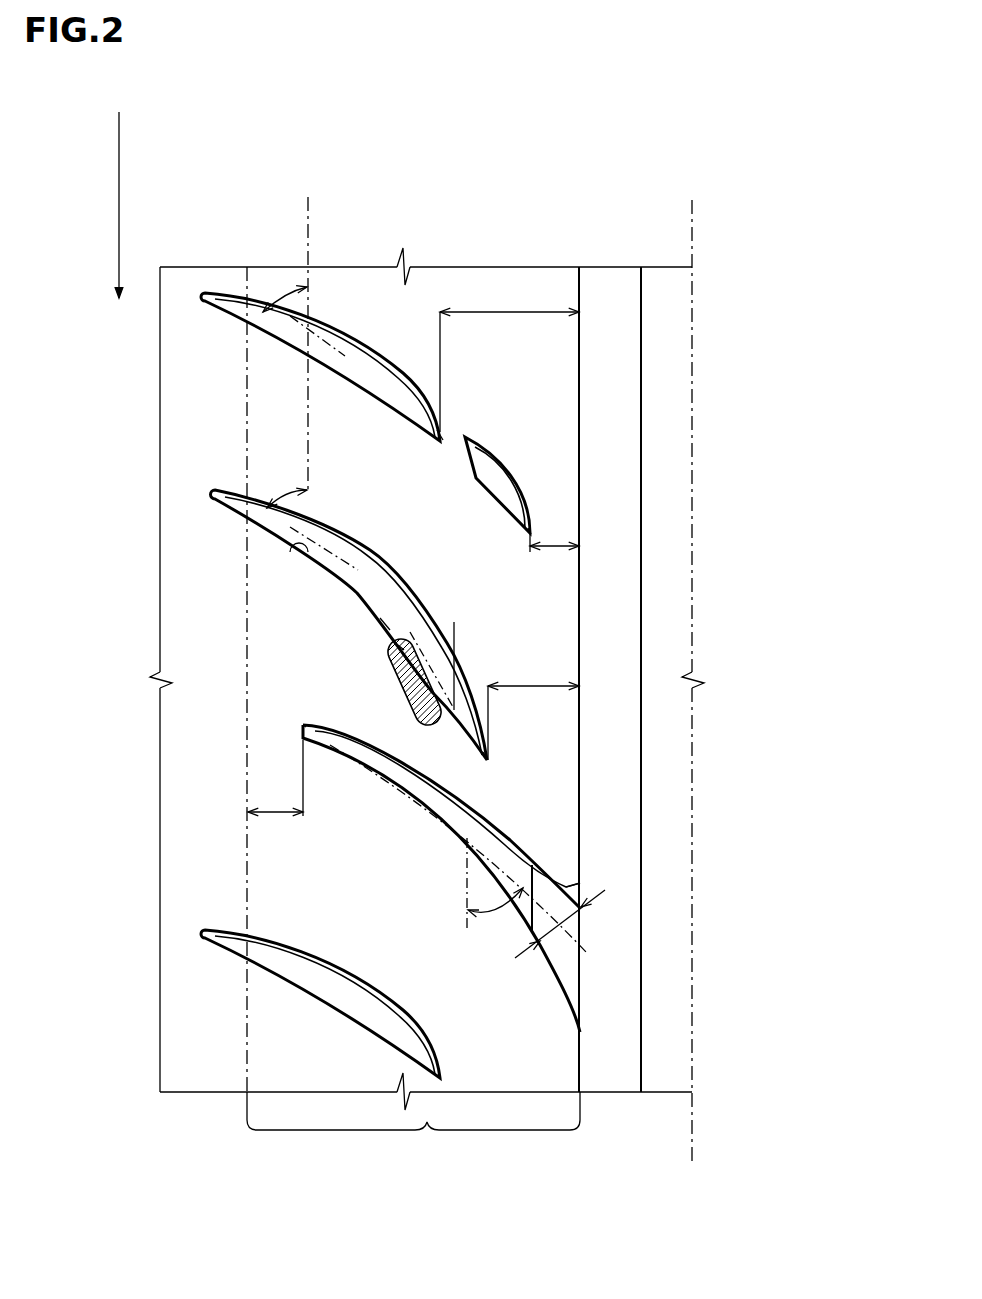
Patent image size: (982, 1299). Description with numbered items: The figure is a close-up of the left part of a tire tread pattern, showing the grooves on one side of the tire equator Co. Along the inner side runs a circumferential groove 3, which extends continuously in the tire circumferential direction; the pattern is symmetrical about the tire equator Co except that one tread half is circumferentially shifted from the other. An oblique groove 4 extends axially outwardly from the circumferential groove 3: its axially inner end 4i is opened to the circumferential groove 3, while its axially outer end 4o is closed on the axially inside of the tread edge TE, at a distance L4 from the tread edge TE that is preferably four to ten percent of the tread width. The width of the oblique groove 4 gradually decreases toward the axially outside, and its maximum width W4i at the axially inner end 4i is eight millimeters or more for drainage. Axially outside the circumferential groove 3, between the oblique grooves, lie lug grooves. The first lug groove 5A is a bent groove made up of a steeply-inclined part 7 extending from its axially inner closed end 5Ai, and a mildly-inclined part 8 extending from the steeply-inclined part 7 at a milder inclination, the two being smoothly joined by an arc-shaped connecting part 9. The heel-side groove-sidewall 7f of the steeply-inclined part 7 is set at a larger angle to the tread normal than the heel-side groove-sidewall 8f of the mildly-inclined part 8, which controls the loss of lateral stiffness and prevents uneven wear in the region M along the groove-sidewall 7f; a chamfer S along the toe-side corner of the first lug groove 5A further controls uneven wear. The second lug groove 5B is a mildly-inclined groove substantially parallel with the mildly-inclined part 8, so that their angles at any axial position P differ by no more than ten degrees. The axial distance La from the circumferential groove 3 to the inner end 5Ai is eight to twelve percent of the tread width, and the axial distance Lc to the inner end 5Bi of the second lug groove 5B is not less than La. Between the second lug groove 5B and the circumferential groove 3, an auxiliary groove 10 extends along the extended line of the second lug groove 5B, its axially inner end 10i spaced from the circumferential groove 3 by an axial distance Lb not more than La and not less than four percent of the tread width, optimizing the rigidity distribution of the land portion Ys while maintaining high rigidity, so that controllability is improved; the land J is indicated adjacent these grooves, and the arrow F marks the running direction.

The circumferential groove 3 is at (615, 285).
The first lug groove 5A is at (222, 500).
The second lug groove 5B is at (228, 312).
The axially inner end of the first lug groove 5Ai is at (503, 764).
The axially inner end of the second lug groove 5Bi is at (447, 431).
The steeply-inclined part 7 is at (447, 692).
The heel-side groove-sidewall of the steeply-inclined part 7f is at (398, 690).
The mildly-inclined part 8 is at (357, 537).
The heel-side groove-sidewall of the mildly-inclined part 8f is at (307, 548).
The connecting part 9 is at (412, 583).
The auxiliary groove 10 is at (498, 487).
The axially inner end of the auxiliary groove 10i is at (538, 530).
The oblique groove 4 is at (445, 878).
The axially outer end of the oblique groove 4o is at (300, 732).
The axially inner end of the oblique groove 4i is at (587, 890).
The maximum width of the oblique groove at the axially inner end W4i is at (555, 918).
The region along the groove-sidewall M is at (395, 662).
The chamfer S is at (337, 330).
The land portion J is at (556, 833).
The axial position P is at (304, 330).
The tread edge TE is at (247, 1063).
The tire equator Co is at (689, 668).
The rotational direction F is at (110, 205).
The axial distance from the circumferential groove to the inner end of the second lu Lc is at (510, 312).
The axial distance between the inner end of the auxiliary groove and the circumferen Lb is at (553, 545).
The axial distance from the circumferential groove to the inner end of the first lug La is at (533, 686).
The distance from the tread edge to the outer end of the oblique groove L4 is at (250, 815).
The land portion Ys is at (413, 1133).